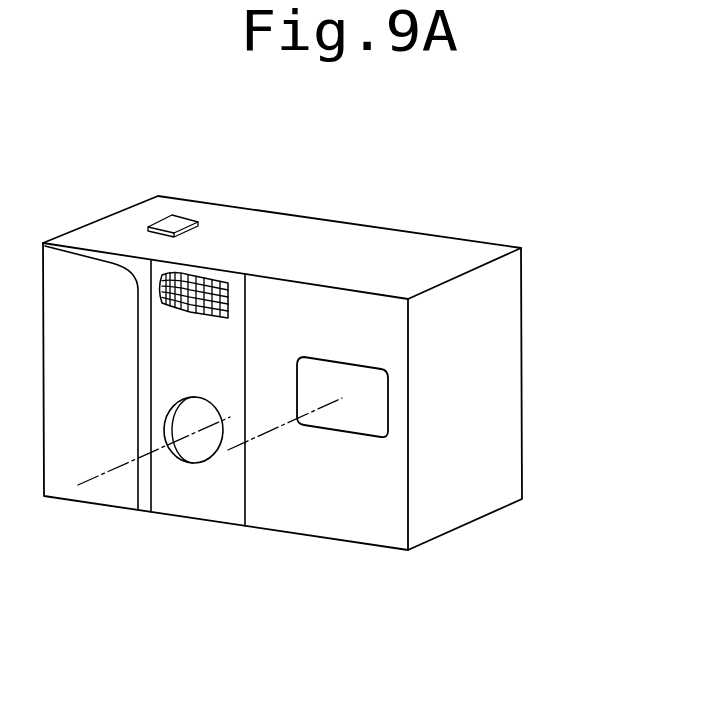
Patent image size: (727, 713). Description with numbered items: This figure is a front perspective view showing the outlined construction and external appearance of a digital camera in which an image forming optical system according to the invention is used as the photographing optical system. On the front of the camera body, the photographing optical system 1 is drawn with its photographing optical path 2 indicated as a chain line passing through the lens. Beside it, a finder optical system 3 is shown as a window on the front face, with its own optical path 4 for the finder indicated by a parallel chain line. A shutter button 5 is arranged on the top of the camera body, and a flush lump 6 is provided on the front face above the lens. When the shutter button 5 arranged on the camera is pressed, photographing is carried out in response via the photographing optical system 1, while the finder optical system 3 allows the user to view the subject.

The photographing optical system 1 is at (208, 443).
The photographing optical path 2 is at (127, 463).
The finder optical system 3 is at (367, 407).
The optical path for finder 4 is at (273, 428).
The shutter button 5 is at (178, 226).
The flush lump 6 is at (190, 282).